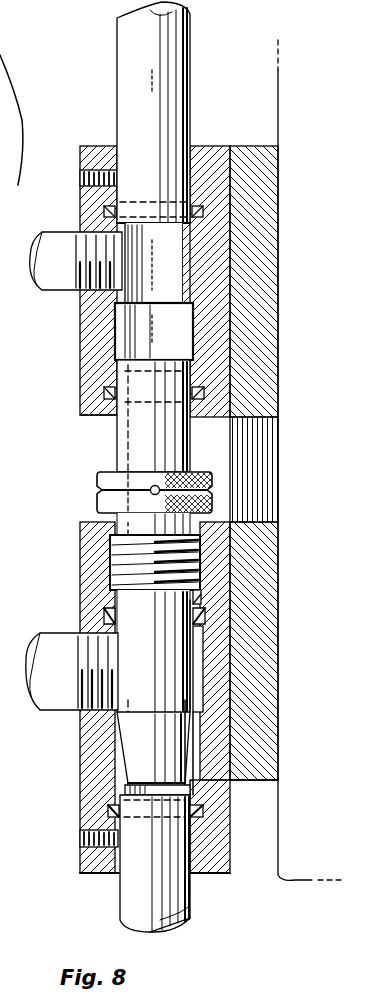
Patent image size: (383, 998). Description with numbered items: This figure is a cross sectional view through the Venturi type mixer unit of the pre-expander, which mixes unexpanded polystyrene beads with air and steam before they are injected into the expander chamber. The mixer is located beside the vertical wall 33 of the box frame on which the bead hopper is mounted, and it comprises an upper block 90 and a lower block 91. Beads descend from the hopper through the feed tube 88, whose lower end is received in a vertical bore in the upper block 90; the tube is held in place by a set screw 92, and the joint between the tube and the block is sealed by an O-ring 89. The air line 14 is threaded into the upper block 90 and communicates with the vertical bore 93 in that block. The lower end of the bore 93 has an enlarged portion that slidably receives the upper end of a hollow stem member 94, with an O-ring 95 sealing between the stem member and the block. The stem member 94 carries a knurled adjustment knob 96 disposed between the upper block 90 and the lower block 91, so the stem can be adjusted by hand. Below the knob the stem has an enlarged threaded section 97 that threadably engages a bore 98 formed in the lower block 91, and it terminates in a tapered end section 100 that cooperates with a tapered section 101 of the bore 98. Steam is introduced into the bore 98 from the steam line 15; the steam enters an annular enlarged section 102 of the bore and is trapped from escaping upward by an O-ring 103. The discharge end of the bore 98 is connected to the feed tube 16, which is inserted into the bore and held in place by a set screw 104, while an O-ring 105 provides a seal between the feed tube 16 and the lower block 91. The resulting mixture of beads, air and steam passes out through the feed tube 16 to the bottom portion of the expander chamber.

The air line 14 is at (48, 238).
The steam line 15 is at (45, 648).
The feed tube 16 is at (190, 904).
The vertical wall 33 is at (280, 88).
The feed tube 88 is at (187, 42).
The O-ring 89 is at (205, 212).
The upper block 90 is at (80, 330).
The lower block 91 is at (90, 558).
The set screw 92 is at (82, 173).
The vertical bore 93 is at (180, 332).
The hollow stem member 94 is at (137, 445).
The O-ring 95 is at (105, 393).
The knurled adjustment knob 96 is at (110, 495).
The enlarged threaded section 97 is at (205, 552).
The bore 98 is at (200, 597).
The tapered end section 100 is at (175, 745).
The tapered section 101 is at (190, 760).
The annular enlarged section 102 is at (200, 678).
The O-ring 103 is at (205, 617).
The set screw 104 is at (83, 845).
The O-ring 105 is at (108, 812).